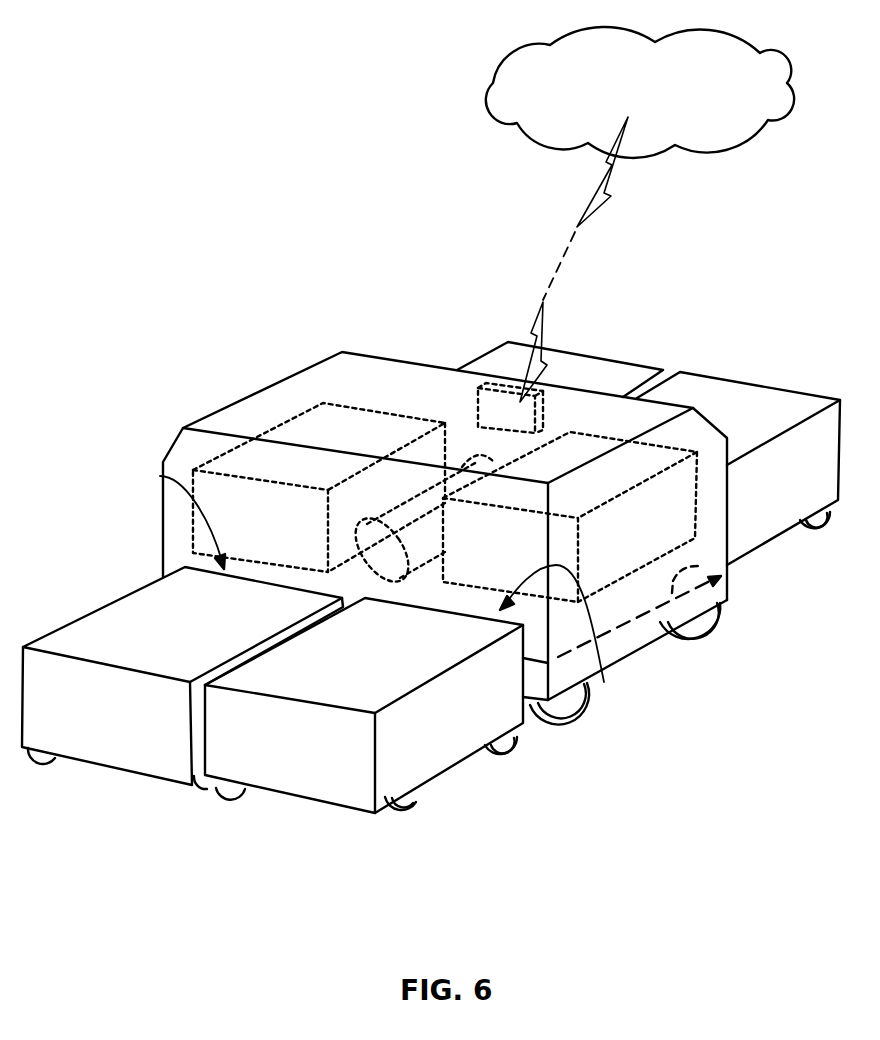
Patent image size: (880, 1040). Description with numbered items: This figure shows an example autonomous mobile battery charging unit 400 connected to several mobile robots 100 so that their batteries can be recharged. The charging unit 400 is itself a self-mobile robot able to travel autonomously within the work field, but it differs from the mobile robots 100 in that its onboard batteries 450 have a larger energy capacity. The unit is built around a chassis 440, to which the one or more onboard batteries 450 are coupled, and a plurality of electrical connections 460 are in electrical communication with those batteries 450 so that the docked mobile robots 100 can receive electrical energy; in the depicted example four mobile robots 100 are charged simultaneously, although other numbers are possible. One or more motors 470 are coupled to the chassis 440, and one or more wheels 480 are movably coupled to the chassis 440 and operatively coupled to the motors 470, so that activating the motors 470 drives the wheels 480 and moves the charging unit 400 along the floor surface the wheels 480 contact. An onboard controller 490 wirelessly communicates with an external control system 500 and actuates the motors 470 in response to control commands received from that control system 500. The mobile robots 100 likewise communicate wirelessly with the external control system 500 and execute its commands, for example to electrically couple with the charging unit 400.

The mobile robot 100 is at (108, 604).
The autonomous mobile battery charging unit 400 is at (264, 378).
The chassis 440 is at (728, 590).
The onboard battery 450 is at (324, 402).
The electrical connection 460 is at (160, 476).
The motor 470 is at (473, 457).
The wheel 480 is at (719, 626).
The onboard controller 490 is at (500, 380).
The external control system 500 is at (662, 106).